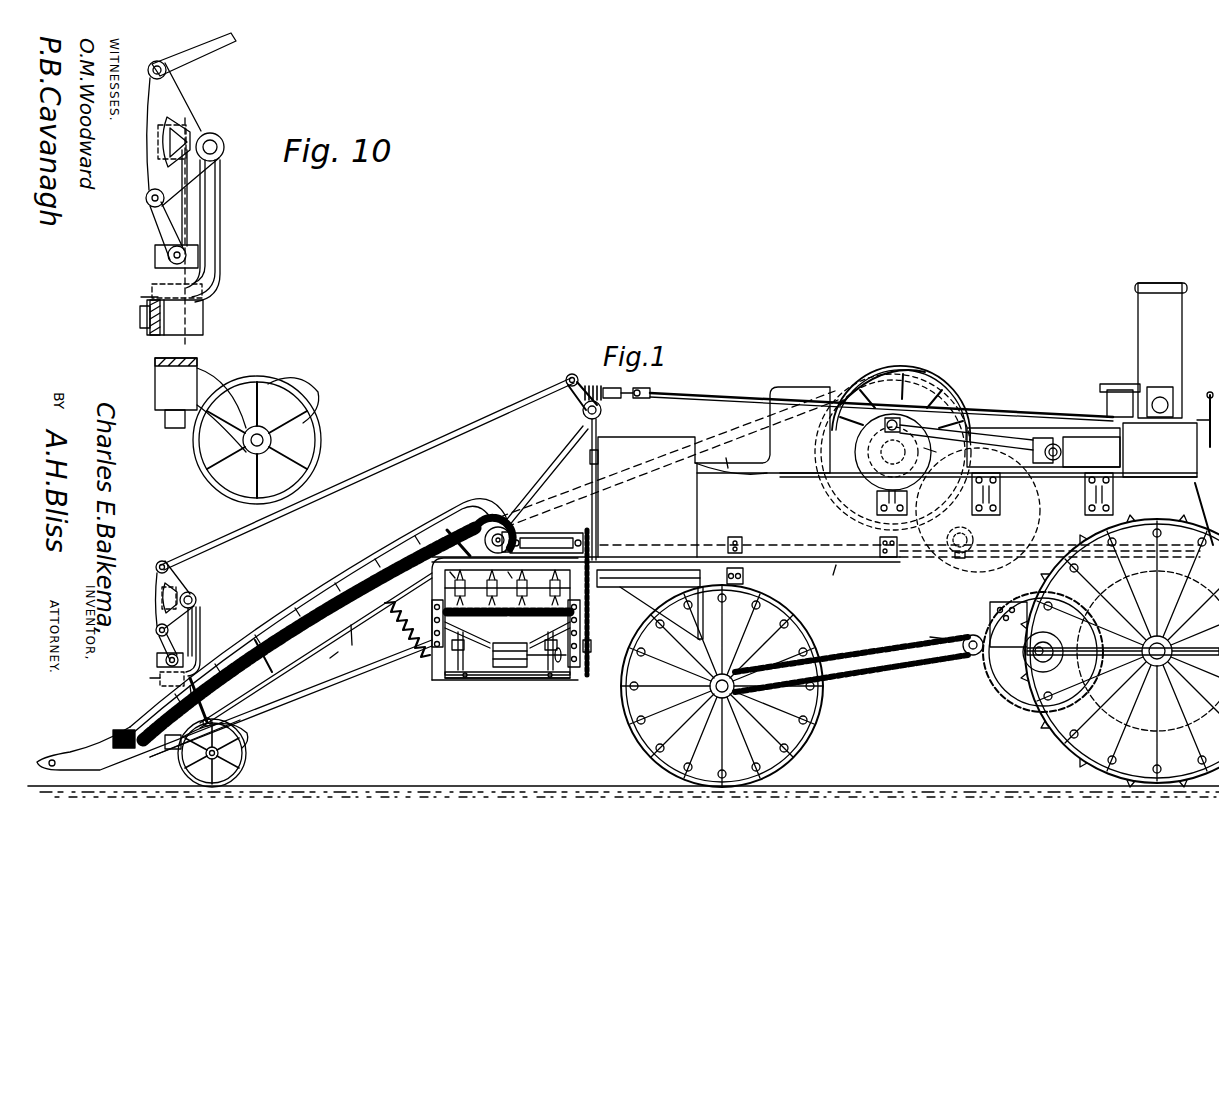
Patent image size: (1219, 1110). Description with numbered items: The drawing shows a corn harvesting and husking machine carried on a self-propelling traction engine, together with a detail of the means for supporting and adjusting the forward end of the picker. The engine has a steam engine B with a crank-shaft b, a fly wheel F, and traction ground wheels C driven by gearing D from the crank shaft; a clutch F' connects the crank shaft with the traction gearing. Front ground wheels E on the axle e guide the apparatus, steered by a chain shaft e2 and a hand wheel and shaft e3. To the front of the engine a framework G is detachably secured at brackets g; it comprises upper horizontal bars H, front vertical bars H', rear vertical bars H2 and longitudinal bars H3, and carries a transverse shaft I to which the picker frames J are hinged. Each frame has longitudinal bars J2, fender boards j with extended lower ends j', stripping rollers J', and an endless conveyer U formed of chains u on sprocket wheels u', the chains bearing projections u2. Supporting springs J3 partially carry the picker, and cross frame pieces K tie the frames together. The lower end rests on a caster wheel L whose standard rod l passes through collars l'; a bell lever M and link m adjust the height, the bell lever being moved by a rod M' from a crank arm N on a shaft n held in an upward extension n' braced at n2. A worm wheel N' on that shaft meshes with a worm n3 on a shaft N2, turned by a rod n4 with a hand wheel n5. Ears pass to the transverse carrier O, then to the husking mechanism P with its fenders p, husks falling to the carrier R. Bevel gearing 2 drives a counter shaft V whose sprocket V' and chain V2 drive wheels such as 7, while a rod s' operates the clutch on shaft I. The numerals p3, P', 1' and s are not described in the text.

In FIG. 10, the rod M' is at (198, 56).
In FIG. 1, the rod M' is at (367, 474).
In FIG. 10, the bell lever M is at (190, 134).
In FIG. 1, the bell lever M is at (176, 594).
In FIG. 10, the sleeves or collars l' is at (163, 214).
In FIG. 1, the sleeves or collars l' is at (161, 636).
In FIG. 10, the standard rod l is at (205, 226).
In FIG. 1, the standard rod l is at (197, 653).
In FIG. 10, the link m is at (155, 228).
In FIG. 1, the link m is at (160, 647).
In FIG. 10, the cross frame piece K is at (146, 318).
In FIG. 10, the caster wheel L is at (261, 382).
In FIG. 1, the caster wheel L is at (247, 752).
In FIG. 1, the supplemental frame J is at (273, 634).
In FIG. 1, the side fender board j is at (256, 641).
In FIG. 1, the endless chain u is at (313, 633).
In FIG. 1, the projections u2 is at (270, 632).
In FIG. 1, the endless carrier or conveyer U is at (351, 643).
In FIG. 1, the longitudinal bar J2 is at (330, 658).
In FIG. 1, the supporting spring J3 is at (408, 645).
In FIG. 1, the stripping rollers J' is at (207, 718).
In FIG. 1, the extended lower end j' is at (43, 778).
In FIG. 1, the crank arm N is at (572, 395).
In FIG. 1, the worm n3 is at (593, 383).
In FIG. 1, the worm shaft N2 is at (636, 388).
In FIG. 1, the shaft n is at (574, 420).
In FIG. 1, the worm wheel N' is at (607, 489).
In FIG. 1, the brace n2 is at (548, 462).
In FIG. 1, the upward extension n' is at (603, 458).
In FIG. 1, the rod n4 is at (1015, 411).
In FIG. 1, the sprocket wheel u' is at (479, 518).
In FIG. 1, the transverse shaft I is at (512, 542).
In FIG. 1, the framework G is at (556, 533).
In FIG. 1, the counter shaft V is at (547, 525).
In FIG. 1, the sprocket wheel V' is at (601, 584).
In FIG. 1, the sprocket chain V2 is at (592, 645).
In FIG. 1, the upper horizontal bar H is at (635, 608).
In FIG. 1, the front vertical bar H' is at (427, 620).
In FIG. 1, the rear vertical bar H2 is at (581, 629).
In FIG. 1, the longitudinal horizontal bar H3 is at (511, 680).
In FIG. 1, the driven wheel 7 is at (584, 657).
In FIG. 1, the husking mechanism P is at (507, 616).
In FIG. 1, the snapping roll disk p3 is at (466, 592).
In FIG. 1, the transverse carrier O is at (496, 587).
In FIG. 1, the guide board or fender p is at (528, 592).
In FIG. 1, the roll disk P' is at (557, 587).
In FIG. 1, the spike 1' is at (458, 570).
In FIG. 1, the bevel gearing 2 is at (506, 570).
In FIG. 1, the husk carrier R is at (587, 556).
In FIG. 1, the bracket g is at (736, 537).
In FIG. 1, the shaft s is at (959, 547).
In FIG. 1, the clutch rod s' is at (946, 560).
In FIG. 1, the fly wheel F is at (901, 394).
In FIG. 1, the clutch F' is at (882, 375).
In FIG. 1, the crank-shaft b is at (856, 450).
In FIG. 1, the gearing D is at (996, 690).
In FIG. 1, the steam engine B is at (1082, 436).
In FIG. 1, the hand wheel n5 is at (1207, 400).
In FIG. 1, the hand wheel and shaft e3 is at (1061, 563).
In FIG. 1, the chain shaft e2 is at (973, 656).
In FIG. 1, the axle e is at (712, 688).
In FIG. 1, the front ground wheel E is at (816, 712).
In FIG. 1, the traction ground wheel C is at (1036, 733).